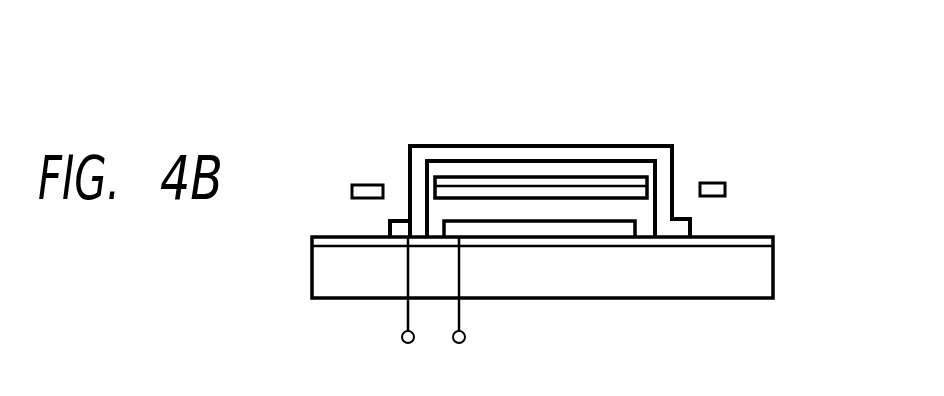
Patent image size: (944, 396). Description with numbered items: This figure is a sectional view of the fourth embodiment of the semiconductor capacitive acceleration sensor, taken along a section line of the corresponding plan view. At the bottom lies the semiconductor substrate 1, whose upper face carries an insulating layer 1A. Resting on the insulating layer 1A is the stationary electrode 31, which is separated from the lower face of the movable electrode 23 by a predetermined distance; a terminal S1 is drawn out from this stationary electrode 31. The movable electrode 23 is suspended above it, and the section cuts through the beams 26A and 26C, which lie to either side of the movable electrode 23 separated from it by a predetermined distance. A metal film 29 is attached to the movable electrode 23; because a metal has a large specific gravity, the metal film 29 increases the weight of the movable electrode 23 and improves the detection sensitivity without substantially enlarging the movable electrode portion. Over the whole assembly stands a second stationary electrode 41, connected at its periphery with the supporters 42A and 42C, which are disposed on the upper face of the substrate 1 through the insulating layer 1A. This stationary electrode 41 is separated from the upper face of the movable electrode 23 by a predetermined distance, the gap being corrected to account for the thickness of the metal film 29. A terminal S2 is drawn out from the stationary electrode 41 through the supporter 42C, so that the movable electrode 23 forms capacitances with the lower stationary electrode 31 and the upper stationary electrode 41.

The semiconductor substrate 1 is at (755, 283).
The insulating layer 1A is at (758, 238).
The movable electrode 23 is at (483, 191).
The metal film 29 is at (575, 177).
The stationary electrode 31 is at (558, 229).
The stationary electrode 41 is at (641, 143).
The supporter 42A is at (677, 207).
The supporter 42C is at (408, 212).
The beam 26A is at (718, 182).
The beam 26C is at (369, 183).
The terminal S1 is at (460, 308).
The terminal S2 is at (408, 308).